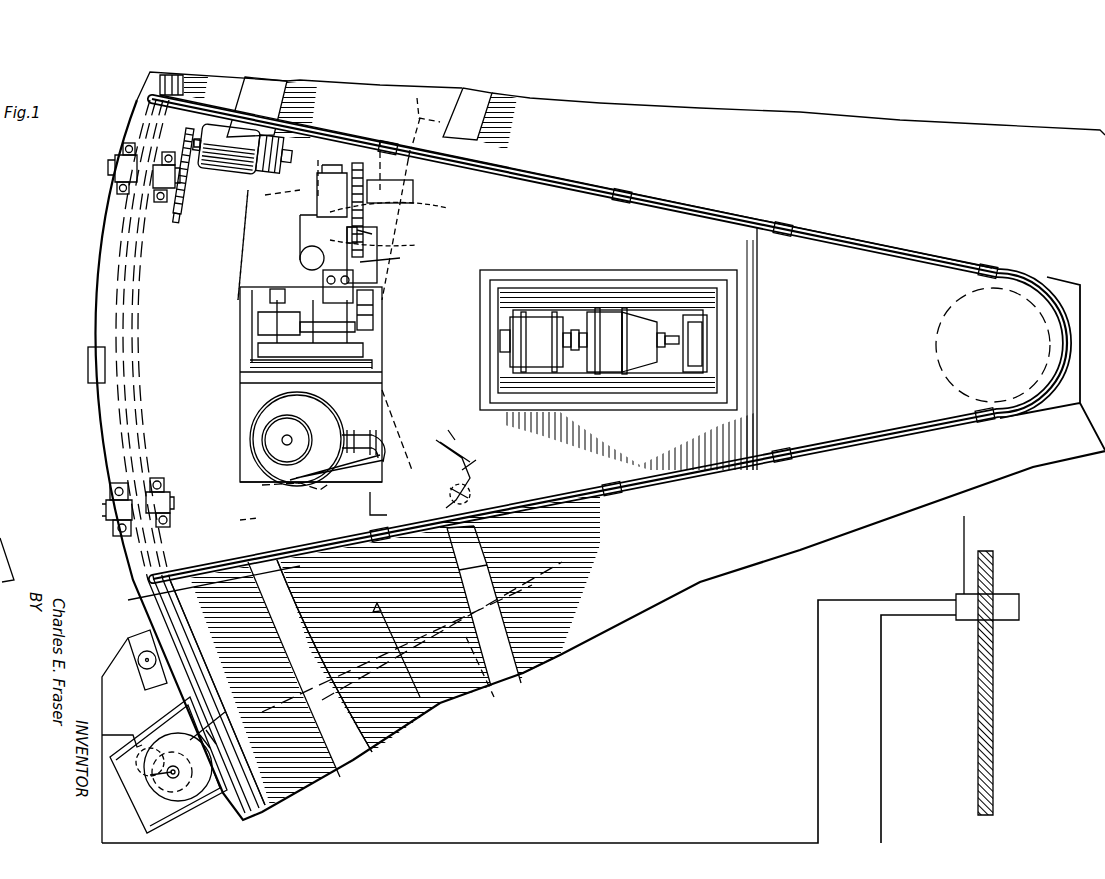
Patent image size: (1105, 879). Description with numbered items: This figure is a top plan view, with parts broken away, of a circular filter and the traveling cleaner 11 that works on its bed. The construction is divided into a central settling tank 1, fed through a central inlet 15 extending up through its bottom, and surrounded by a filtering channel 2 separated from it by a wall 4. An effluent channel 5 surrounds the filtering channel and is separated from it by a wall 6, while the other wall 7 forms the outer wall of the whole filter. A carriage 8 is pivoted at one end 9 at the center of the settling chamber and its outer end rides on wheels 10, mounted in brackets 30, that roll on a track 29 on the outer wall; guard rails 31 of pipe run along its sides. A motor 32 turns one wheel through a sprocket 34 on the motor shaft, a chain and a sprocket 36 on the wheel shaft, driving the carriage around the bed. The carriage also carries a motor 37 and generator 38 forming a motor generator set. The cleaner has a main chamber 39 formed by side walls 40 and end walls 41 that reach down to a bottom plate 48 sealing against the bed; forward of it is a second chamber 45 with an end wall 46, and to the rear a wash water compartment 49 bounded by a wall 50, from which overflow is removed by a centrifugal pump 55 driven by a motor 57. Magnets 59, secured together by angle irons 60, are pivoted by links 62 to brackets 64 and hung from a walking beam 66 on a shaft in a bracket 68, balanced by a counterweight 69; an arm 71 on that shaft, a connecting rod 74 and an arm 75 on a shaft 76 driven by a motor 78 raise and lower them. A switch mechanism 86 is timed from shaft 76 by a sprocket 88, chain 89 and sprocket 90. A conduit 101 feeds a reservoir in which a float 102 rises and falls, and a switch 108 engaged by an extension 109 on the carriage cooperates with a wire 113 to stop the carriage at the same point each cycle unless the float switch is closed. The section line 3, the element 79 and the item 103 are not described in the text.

The settling tank 1 is at (600, 625).
The filtering channel 2 is at (446, 728).
The section line 3 is at (372, 304).
The wall 4 is at (525, 675).
The effluent channel 5 is at (312, 793).
The wall 6 is at (358, 762).
The outer wall 7 is at (288, 805).
The carriage 8 is at (718, 208).
The pivot 9 is at (1012, 283).
The wheels 10 is at (140, 205).
The traveling cleaner 11 is at (237, 256).
The central inlet 15 is at (1045, 310).
The track 29 is at (165, 590).
The brackets 30 is at (104, 500).
The guard rails 31 is at (843, 236).
The motor 32 is at (243, 151).
The sprocket 34 is at (195, 128).
The sprocket 36 is at (185, 200).
The motor 37 is at (608, 340).
The generator 38 is at (647, 341).
The chamber 39 is at (373, 298).
The side walls 40 is at (240, 337).
The end walls 41 is at (380, 372).
The second chamber 45 is at (413, 172).
The end wall 46 is at (380, 222).
The bottom plate 48 is at (262, 200).
The wash water compartment 49 is at (380, 420).
The wall 50 is at (352, 470).
The centrifugal pump 55 is at (325, 415).
The motor 57 is at (287, 440).
The magnets 59 is at (372, 364).
The angle irons 60 is at (252, 323).
The links 62 is at (243, 300).
The brackets 64 is at (278, 289).
The walking beam 66 is at (313, 300).
The bracket 68 is at (353, 290).
The counterweight 69 is at (300, 255).
The arm 71 is at (373, 310).
The connecting rod 74 is at (375, 265).
The arm 75 is at (380, 243).
The shaft 76 is at (400, 232).
The motor 78 is at (317, 172).
The cylinder 79 is at (300, 225).
The switch mechanism 86 is at (413, 192).
The sprocket 88 is at (363, 175).
The chain 89 is at (440, 212).
The sprocket 90 is at (352, 255).
The conduit 101 is at (494, 697).
The float 102 is at (185, 735).
The base plate 103 is at (218, 835).
The switch 108 is at (128, 648).
The extension 109 is at (88, 362).
The wire 113 is at (118, 733).